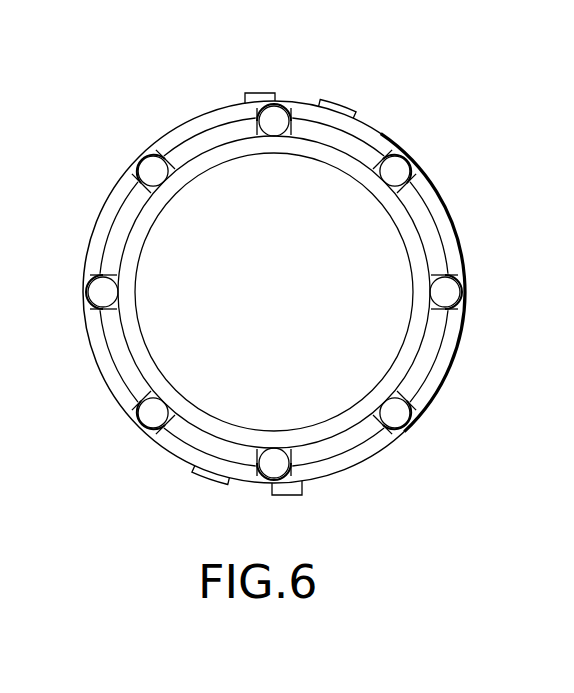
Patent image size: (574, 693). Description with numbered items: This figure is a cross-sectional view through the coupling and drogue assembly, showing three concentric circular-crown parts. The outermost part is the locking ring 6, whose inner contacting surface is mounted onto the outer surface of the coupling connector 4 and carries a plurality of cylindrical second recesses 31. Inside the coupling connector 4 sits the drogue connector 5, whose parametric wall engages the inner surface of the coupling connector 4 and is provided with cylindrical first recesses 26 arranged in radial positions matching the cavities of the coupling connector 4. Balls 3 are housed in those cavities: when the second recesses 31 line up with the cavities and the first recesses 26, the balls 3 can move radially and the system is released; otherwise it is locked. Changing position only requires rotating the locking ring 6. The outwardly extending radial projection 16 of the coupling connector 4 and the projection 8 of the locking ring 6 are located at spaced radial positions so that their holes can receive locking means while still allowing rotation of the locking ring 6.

The balls 3 is at (410, 428).
The coupling connector 4 is at (437, 261).
The drogue connector 5 is at (410, 353).
The locking ring 6 is at (440, 220).
The projection 8 is at (337, 106).
The radial projection 16 is at (263, 99).
The first recesses 26 is at (406, 186).
The second recesses 31 is at (399, 152).